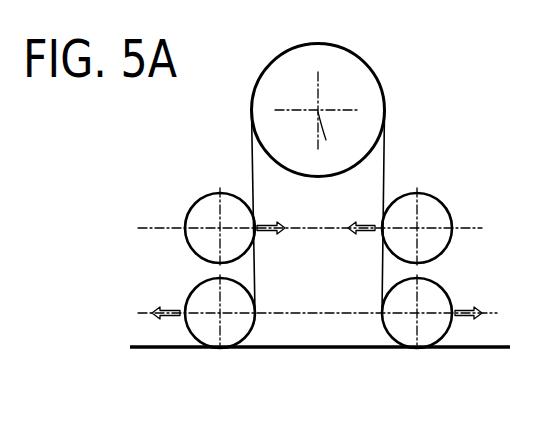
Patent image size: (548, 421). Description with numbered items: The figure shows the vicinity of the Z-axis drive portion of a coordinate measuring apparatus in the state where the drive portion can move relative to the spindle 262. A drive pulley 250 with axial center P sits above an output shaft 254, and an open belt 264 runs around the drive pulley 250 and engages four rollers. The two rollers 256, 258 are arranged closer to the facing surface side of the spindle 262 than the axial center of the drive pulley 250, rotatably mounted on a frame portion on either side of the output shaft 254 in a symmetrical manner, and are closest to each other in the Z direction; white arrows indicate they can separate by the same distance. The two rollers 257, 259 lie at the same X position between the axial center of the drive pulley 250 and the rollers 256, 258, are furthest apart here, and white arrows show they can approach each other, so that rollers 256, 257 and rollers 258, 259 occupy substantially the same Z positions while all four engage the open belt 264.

The drive pulley 250 is at (378, 42).
The output shaft 254 is at (347, 97).
The open belt 264 is at (385, 160).
The roller 259 is at (246, 243).
The roller 258 is at (207, 328).
The roller 257 is at (440, 238).
The roller 256 is at (428, 327).
The spindle 262 is at (405, 392).